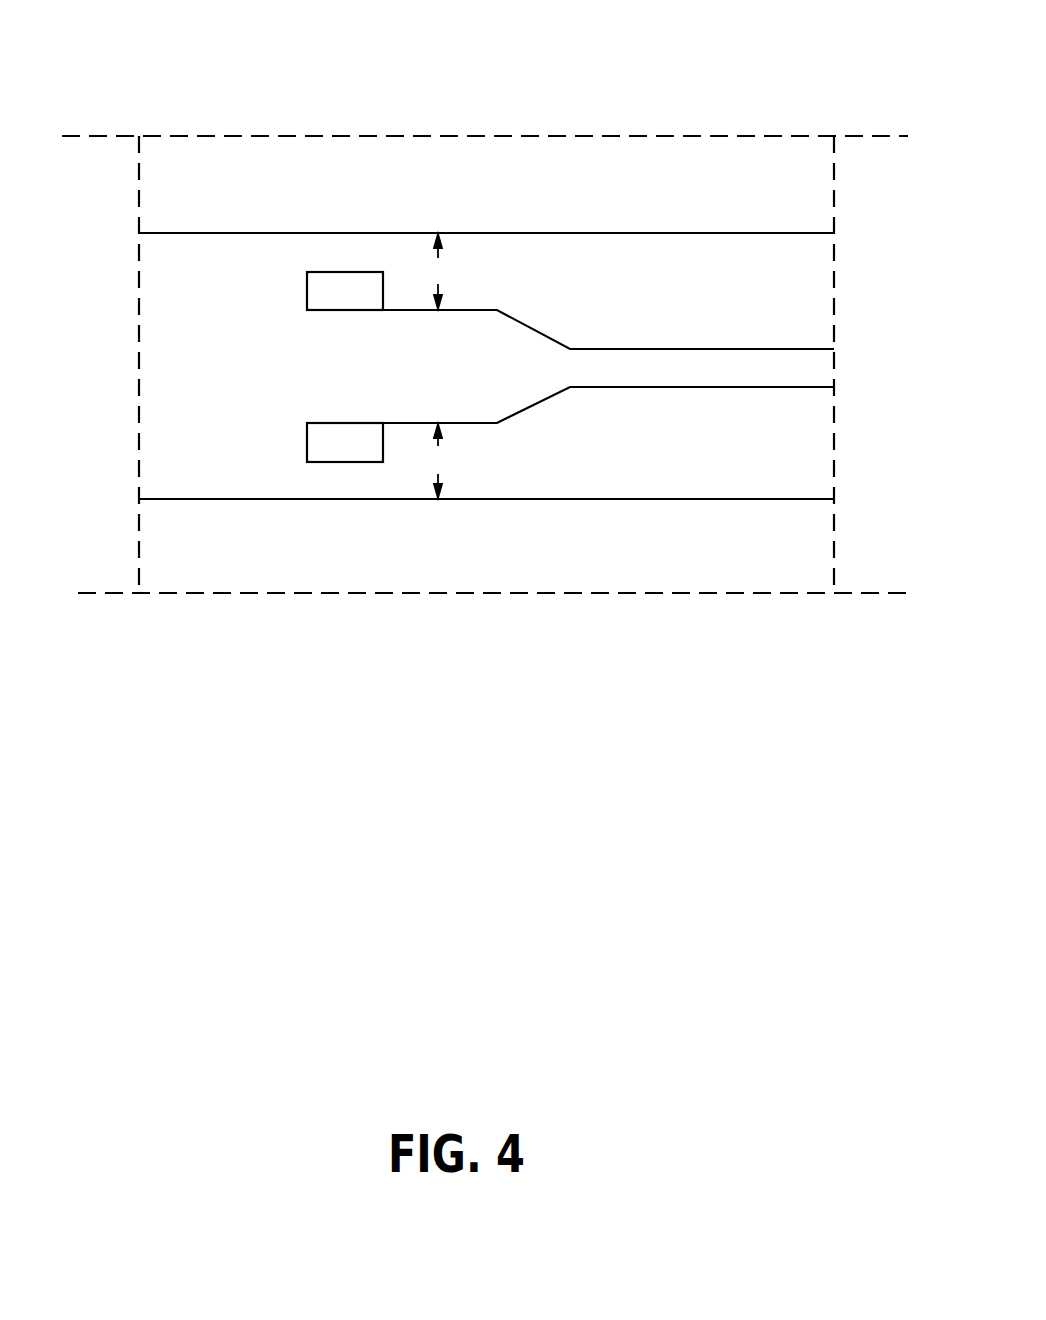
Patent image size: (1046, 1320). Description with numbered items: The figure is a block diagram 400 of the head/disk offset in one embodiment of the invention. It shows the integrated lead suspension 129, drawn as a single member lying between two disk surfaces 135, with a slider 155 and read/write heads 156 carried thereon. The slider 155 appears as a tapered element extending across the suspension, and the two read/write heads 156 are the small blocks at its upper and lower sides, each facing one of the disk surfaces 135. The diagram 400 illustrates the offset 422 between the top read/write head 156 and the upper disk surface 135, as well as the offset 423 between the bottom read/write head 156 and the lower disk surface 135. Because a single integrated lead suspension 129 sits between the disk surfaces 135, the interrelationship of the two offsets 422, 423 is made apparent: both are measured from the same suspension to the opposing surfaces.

The diagram 400 is at (490, 40).
The integrated lead suspension 129 is at (937, 382).
The disk surface 135 is at (223, 240).
The slider 155 is at (706, 457).
The read/write head 156 is at (365, 318).
The offset 422 is at (439, 271).
The offset 423 is at (439, 461).